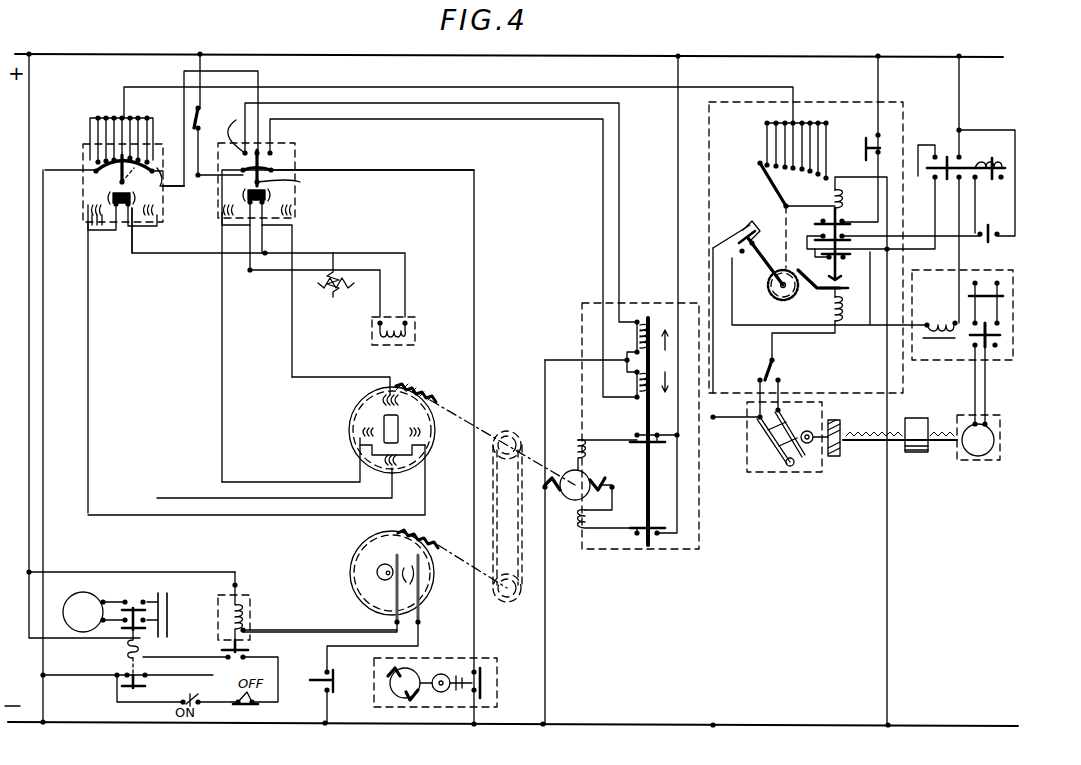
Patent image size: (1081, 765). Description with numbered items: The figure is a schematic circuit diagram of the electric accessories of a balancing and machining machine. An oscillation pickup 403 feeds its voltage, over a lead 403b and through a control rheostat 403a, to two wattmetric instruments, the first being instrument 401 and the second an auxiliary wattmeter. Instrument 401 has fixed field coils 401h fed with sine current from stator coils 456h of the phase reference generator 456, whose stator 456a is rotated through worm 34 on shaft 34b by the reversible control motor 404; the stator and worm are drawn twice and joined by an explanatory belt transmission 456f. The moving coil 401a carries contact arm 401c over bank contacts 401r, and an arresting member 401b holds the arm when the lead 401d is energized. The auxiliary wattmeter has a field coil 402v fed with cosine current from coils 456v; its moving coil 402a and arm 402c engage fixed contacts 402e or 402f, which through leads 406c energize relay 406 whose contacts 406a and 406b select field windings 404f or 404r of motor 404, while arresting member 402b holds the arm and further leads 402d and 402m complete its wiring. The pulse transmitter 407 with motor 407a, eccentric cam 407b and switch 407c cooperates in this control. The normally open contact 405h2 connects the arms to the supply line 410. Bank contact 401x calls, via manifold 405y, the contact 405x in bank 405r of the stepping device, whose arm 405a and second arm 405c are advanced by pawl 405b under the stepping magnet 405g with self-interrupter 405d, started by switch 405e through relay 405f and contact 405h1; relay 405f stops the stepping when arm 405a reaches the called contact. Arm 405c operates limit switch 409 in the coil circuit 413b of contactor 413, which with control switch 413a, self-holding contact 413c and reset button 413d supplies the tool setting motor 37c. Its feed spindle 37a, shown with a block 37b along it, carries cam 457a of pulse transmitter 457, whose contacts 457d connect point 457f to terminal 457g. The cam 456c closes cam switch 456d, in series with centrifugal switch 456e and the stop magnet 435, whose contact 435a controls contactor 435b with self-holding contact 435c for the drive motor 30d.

The direct-current supply line 410 is at (513, 391).
The wattmetric instrument 401 is at (107, 195).
The moving coil 401a is at (143, 358).
The contact member 401b is at (104, 179).
The contact arm 401c is at (91, 186).
The lead 401d is at (237, 126).
The fixed field coils 401h is at (173, 228).
The bank contacts 401r is at (93, 139).
The bank contact 401x is at (180, 192).
The moving coil 402a is at (281, 260).
The contact member 402b is at (357, 159).
The contact arm 402c is at (291, 177).
The conductor 402d is at (372, 447).
The fixed contact 402e is at (224, 136).
The fixed contact 402f is at (452, 258).
The contact 402m is at (421, 209).
The fixed field coil 402v is at (304, 237).
The electric transducer 403 is at (376, 331).
The control rheostat 403a is at (337, 283).
The conductor 403b is at (268, 259).
The reversible control motor 404 is at (578, 542).
The field winding 404f is at (607, 446).
The field winding 404r is at (597, 540).
The rotatable contact arm 405a is at (780, 223).
The switching pawl 405b is at (815, 297).
The second arm 405c is at (768, 289).
The self-interrupter switch 405d is at (893, 232).
The switch contact 405e is at (881, 139).
The electromagnetic relay 405f is at (861, 440).
The stepping magnet 405g is at (821, 324).
The switch contact 405h1 is at (752, 381).
The switch contact 405h2 is at (185, 116).
The contact bank 405r is at (753, 177).
The bank contact 405x is at (806, 247).
The manifold connection 405y is at (458, 94).
The electromagnetic relay 406 is at (622, 445).
The control contact 406a is at (643, 508).
The control contact 406b is at (656, 491).
The leads 406c is at (619, 245).
The pulse transmitter 407 is at (445, 669).
The auxiliary motor 407a is at (423, 670).
The eccentric cam 407b is at (445, 711).
The on-and-off switch 407c is at (504, 683).
The limit contact 409 is at (819, 298).
The contactor 413 is at (978, 304).
The control switch 413a is at (985, 189).
The relay coil 413b is at (990, 268).
The self-holding contact 413c is at (960, 149).
The reset push-button contact 413d is at (1020, 225).
The stop magnet 435 is at (287, 608).
The normally closed contact 435a is at (259, 668).
The contactor 435b is at (150, 652).
The self-holding contact 435c is at (127, 687).
The drive motor 30d is at (109, 603).
The worm 34 is at (423, 454).
The shaft 34b is at (502, 486).
The feed screw spindle 37a is at (900, 453).
The nut block 37b is at (919, 452).
The tool setting motor 37c is at (977, 420).
The auxiliary dynamo-electric generator 456 is at (372, 501).
The stator 456a is at (326, 512).
The cam 456c is at (381, 563).
The cam switch 456d is at (356, 613).
The centrifugal switch 456e is at (339, 696).
The endless belt transmission 456f is at (543, 516).
The stator coils 456h is at (279, 465).
The stator coils 456v is at (289, 477).
The pulse transmitter 457 is at (766, 457).
The cam 457a is at (830, 456).
The contact pair 457d is at (794, 481).
The connection point 457f is at (754, 439).
The terminal 457g is at (799, 414).